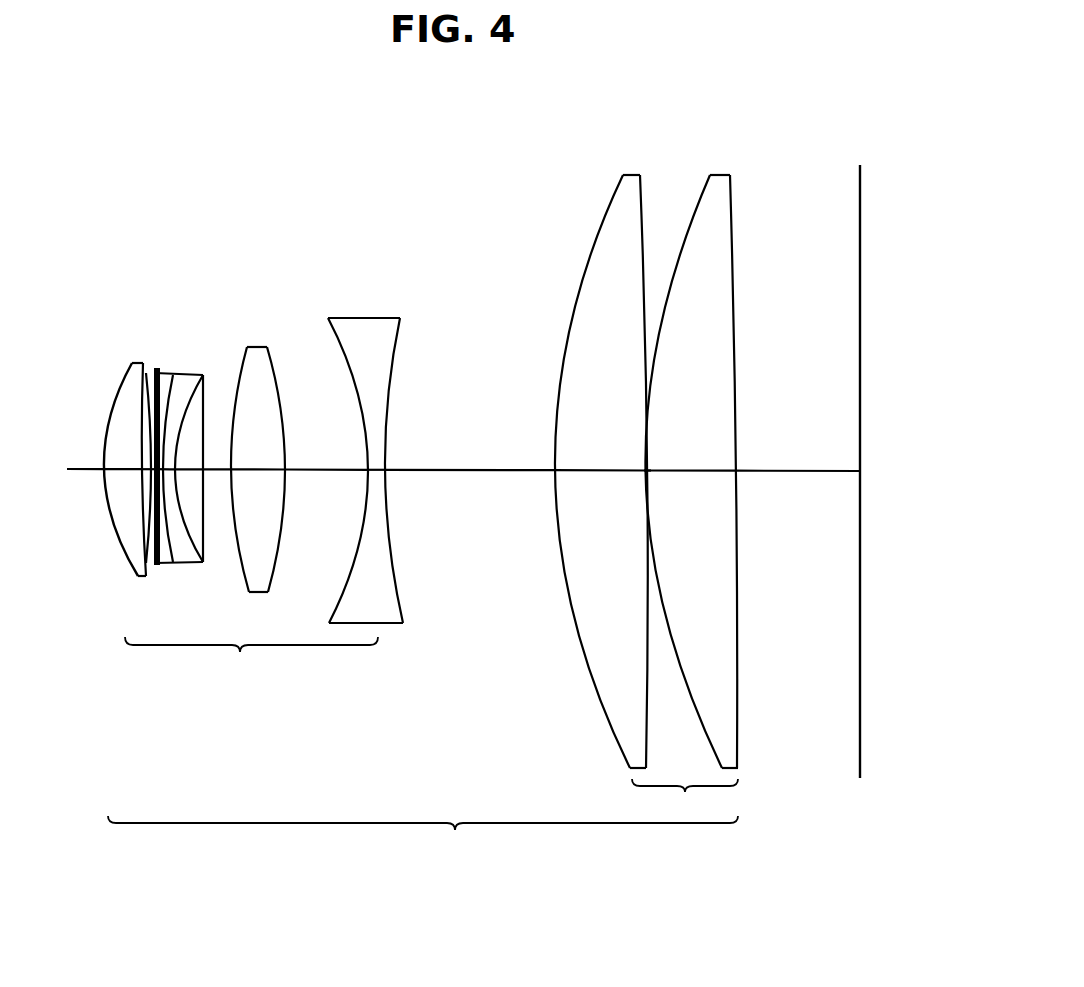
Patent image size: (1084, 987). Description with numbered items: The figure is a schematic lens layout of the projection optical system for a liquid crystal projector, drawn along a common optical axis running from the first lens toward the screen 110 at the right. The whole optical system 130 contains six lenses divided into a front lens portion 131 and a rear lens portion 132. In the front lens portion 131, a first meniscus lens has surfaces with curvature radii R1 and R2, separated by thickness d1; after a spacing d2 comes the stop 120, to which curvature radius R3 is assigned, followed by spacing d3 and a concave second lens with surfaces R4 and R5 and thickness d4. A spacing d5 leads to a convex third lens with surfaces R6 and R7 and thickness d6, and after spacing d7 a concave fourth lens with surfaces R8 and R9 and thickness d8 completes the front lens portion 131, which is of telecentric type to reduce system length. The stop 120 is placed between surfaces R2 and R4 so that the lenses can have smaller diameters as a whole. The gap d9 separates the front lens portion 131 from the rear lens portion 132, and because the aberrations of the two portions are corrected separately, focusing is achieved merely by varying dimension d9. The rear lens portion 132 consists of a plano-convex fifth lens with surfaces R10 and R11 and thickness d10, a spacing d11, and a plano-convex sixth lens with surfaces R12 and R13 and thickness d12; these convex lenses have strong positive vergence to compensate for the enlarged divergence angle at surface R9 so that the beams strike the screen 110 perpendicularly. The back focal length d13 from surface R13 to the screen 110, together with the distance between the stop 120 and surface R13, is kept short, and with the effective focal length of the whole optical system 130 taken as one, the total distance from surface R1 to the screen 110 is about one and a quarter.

The screen 110 is at (862, 502).
The stop 120 is at (156, 366).
The whole optical system 130 is at (423, 839).
The front lens portion 131 is at (251, 662).
The rear lens portion 132 is at (685, 801).
The curvature radius of first lens front surface R1 is at (122, 393).
The curvature radius of first lens rear surface R2 is at (150, 366).
The curvature radius of stop R3 is at (151, 566).
The curvature radius of second lens front surface R4 is at (177, 566).
The curvature radius of second lens rear surface R5 is at (187, 427).
The curvature radius of third lens front surface R6 is at (245, 363).
The curvature radius of third lens rear surface R7 is at (275, 375).
The curvature radius of fourth lens front surface R8 is at (333, 338).
The curvature radius of fourth lens rear surface R9 is at (400, 330).
The curvature radius of fifth lens front surface R10 is at (593, 243).
The curvature radius of fifth lens rear surface R11 is at (642, 202).
The curvature radius of sixth lens front surface R12 is at (697, 217).
The curvature radius of sixth lens rear surface R13 is at (735, 230).
The axial thickness d1 is at (117, 469).
The axial spacing d2 is at (142, 483).
The axial spacing d3 is at (172, 372).
The axial thickness d4 is at (170, 471).
The axial spacing d5 is at (203, 469).
The axial thickness d6 is at (272, 469).
The axial spacing d7 is at (333, 469).
The axial thickness d8 is at (382, 497).
The focusing dimension d9 is at (461, 469).
The axial thickness d10 is at (592, 470).
The axial spacing d11 is at (647, 397).
The axial thickness d12 is at (680, 470).
The back focal length d13 is at (780, 470).